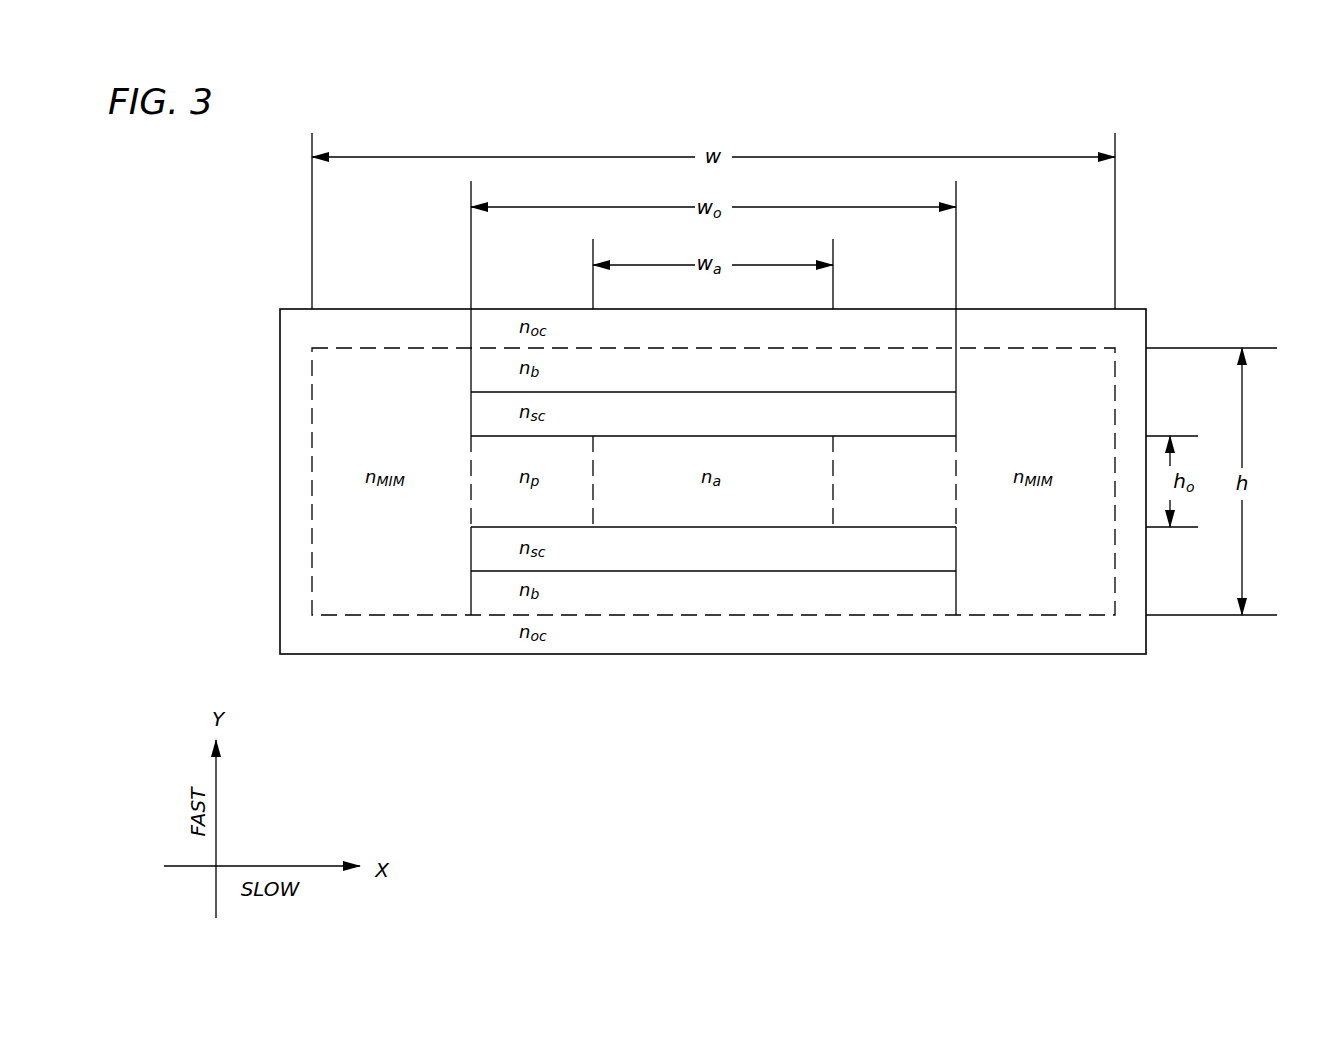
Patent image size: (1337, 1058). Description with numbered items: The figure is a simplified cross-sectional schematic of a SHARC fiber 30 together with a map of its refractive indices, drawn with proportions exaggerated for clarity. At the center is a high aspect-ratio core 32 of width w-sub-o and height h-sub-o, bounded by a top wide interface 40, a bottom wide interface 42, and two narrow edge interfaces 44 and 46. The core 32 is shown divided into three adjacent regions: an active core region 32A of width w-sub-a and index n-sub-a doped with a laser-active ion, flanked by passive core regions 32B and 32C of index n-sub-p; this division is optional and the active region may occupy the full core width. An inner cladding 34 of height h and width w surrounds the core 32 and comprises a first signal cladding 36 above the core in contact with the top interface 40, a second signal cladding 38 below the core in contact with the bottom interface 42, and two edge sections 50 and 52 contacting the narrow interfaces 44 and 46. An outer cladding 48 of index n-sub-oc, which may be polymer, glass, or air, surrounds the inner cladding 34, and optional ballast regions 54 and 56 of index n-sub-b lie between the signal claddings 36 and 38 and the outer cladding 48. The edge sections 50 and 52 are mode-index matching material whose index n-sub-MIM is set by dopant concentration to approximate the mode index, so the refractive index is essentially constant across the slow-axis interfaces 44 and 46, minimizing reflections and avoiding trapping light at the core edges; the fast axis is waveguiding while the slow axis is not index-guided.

The SHARC fiber 30 is at (1197, 173).
The high aspect-ratio core 32 is at (760, 477).
The active core region 32A is at (655, 512).
The passive core region 32B is at (518, 487).
The passive core region 32C is at (879, 493).
The inner cladding 34 is at (720, 615).
The first signal cladding 36 is at (647, 420).
The second signal cladding 38 is at (626, 557).
The top wide interface 40 is at (896, 437).
The bottom wide interface 42 is at (755, 528).
The narrow edge interface 44 is at (471, 495).
The narrow edge interface 46 is at (956, 493).
The outer cladding 48 is at (1128, 330).
The edge section 50 is at (330, 383).
The edge section 52 is at (1090, 598).
The ballast region 54 is at (563, 373).
The ballast region 56 is at (788, 595).